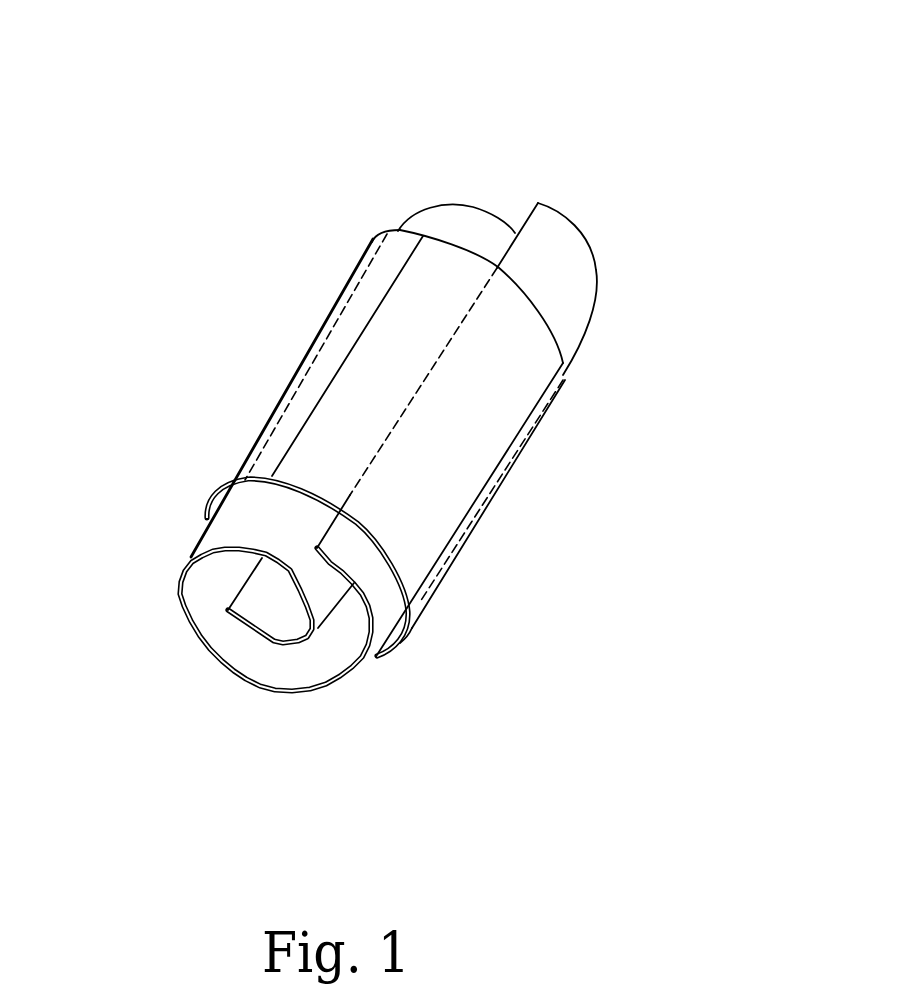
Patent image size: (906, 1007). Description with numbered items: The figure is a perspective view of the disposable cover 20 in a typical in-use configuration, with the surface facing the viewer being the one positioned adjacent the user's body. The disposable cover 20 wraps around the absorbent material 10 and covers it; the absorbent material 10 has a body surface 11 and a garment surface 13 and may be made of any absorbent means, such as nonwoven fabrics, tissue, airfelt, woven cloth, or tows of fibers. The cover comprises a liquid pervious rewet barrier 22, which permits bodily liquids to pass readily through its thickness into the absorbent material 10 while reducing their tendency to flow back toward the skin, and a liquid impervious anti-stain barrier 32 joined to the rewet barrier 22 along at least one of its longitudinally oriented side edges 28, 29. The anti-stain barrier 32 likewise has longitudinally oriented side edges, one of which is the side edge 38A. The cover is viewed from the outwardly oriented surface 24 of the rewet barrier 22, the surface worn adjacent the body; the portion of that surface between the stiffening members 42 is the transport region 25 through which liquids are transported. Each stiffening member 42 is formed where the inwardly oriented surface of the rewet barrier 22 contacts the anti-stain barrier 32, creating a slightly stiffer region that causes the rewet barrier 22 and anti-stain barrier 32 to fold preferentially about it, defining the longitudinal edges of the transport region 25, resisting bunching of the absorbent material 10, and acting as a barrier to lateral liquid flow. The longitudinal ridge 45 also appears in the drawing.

The absorbent material 10 is at (455, 150).
The disposable cover 20 is at (238, 253).
The longitudinal ridge edge 45 is at (362, 255).
The stiffening member 42 is at (317, 353).
The longitudinally oriented side edge 38A is at (303, 424).
The longitudinally oriented side edge 29 is at (292, 443).
The rewet barrier 22 is at (535, 353).
The outwardly oriented surface 24 is at (423, 381).
The transport region 25 is at (465, 488).
The longitudinally oriented side edge 28 is at (480, 546).
The anti-stain barrier 32 is at (433, 593).
The body surface 11 is at (342, 540).
The garment surface 13 is at (247, 677).